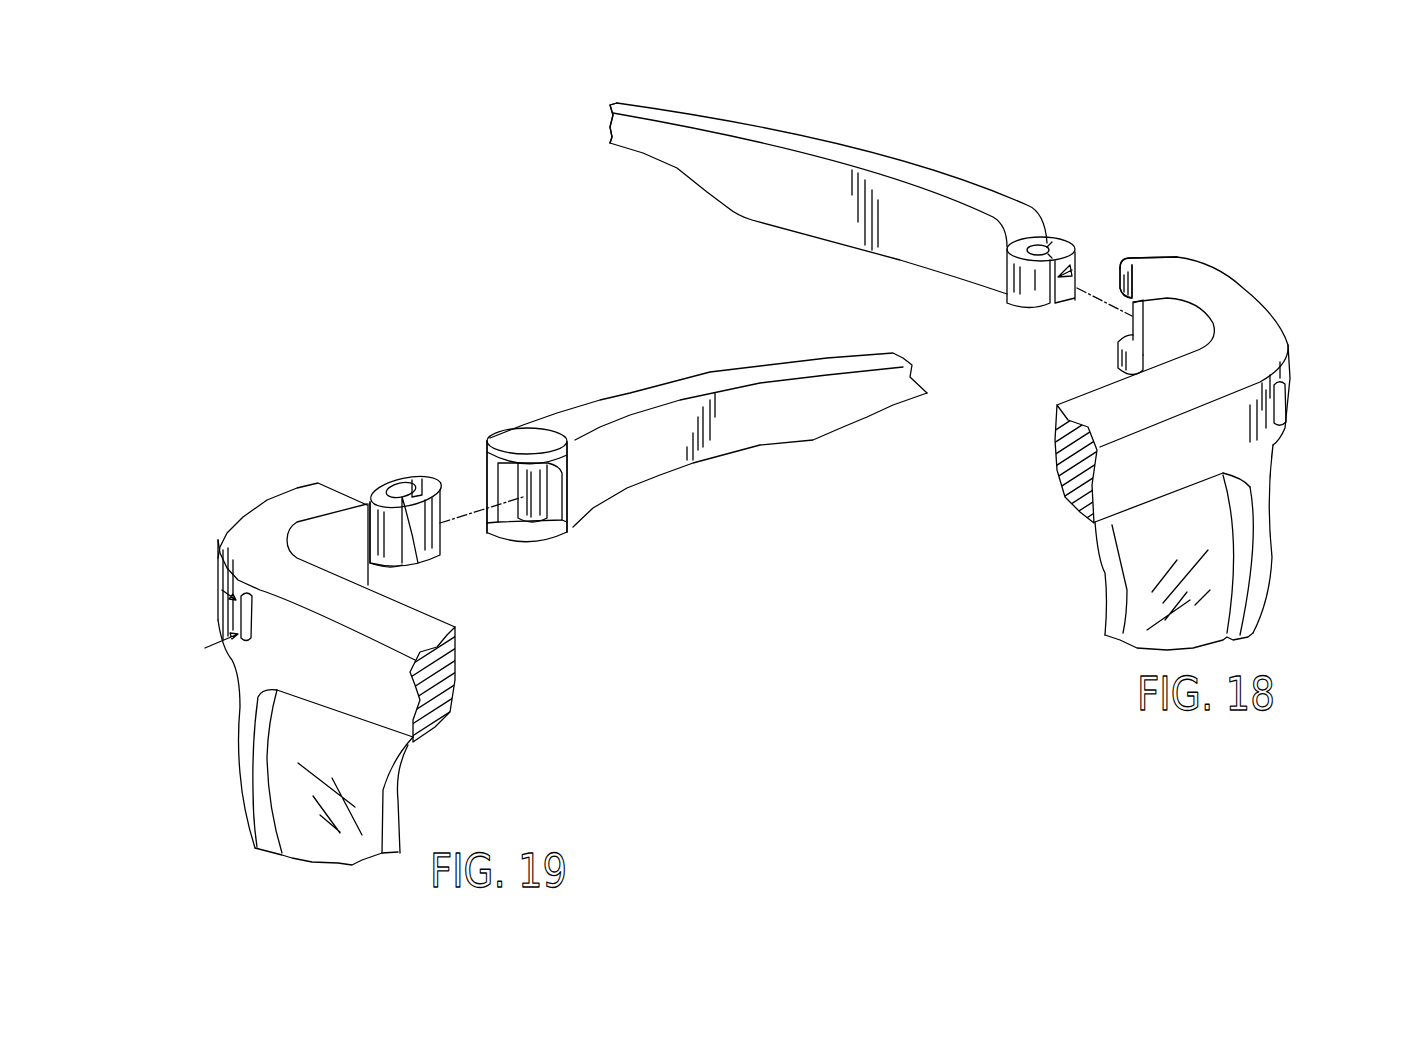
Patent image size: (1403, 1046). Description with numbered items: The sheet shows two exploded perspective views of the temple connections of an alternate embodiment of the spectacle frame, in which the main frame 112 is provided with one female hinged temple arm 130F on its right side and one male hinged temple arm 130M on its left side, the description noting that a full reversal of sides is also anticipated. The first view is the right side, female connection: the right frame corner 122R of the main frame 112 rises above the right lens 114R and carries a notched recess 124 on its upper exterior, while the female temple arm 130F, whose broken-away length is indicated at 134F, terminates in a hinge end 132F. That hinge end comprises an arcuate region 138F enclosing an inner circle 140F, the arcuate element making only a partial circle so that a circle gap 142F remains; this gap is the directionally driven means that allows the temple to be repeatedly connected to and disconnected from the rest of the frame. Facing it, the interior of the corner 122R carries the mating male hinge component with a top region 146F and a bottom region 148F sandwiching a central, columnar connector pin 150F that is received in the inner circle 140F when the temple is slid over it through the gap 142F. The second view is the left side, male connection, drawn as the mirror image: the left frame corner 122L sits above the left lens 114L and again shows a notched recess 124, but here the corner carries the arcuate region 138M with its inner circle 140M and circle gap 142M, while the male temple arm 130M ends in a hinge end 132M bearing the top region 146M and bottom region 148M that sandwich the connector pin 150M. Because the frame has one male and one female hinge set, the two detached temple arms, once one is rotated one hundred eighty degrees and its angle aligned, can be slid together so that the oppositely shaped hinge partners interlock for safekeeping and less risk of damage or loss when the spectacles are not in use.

In FIG. 18, the main frame 112 is at (1131, 471).
In FIG. 18, the right lens 114R is at (1184, 547).
In FIG. 19, the left lens 114L is at (361, 740).
In FIG. 18, the right hinge bracket 122R is at (1200, 348).
In FIG. 19, the left hinge bracket 122L is at (308, 639).
In FIG. 18, the pin 124 is at (1322, 402).
In FIG. 19, the pin 124 is at (240, 638).
In FIG. 18, the female hinged temple arm 130F is at (828, 198).
In FIG. 19, the male hinged temple arm 130M is at (708, 440).
In FIG. 18, the female hinge assembly 132F is at (1071, 229).
In FIG. 19, the male hinge assembly 132M is at (603, 449).
In FIG. 18, the temple arm end 134F is at (646, 128).
In FIG. 18, the female knuckle 138F is at (1023, 292).
In FIG. 19, the male knuckle 138M is at (380, 497).
In FIG. 18, the female knuckle bore 140F is at (1045, 249).
In FIG. 19, the male knuckle 140M is at (436, 513).
In FIG. 18, the female slot 142F is at (1067, 274).
In FIG. 19, the male slot 142M is at (432, 477).
In FIG. 18, the bracket end 146F is at (1125, 262).
In FIG. 19, the sleeve window 146M is at (562, 462).
In FIG. 18, the lower bracket knuckle 148F is at (1118, 352).
In FIG. 19, the hinge pin 148M is at (553, 523).
In FIG. 18, the tab 150F is at (1133, 324).
In FIG. 19, the hinge axis 150M is at (523, 497).